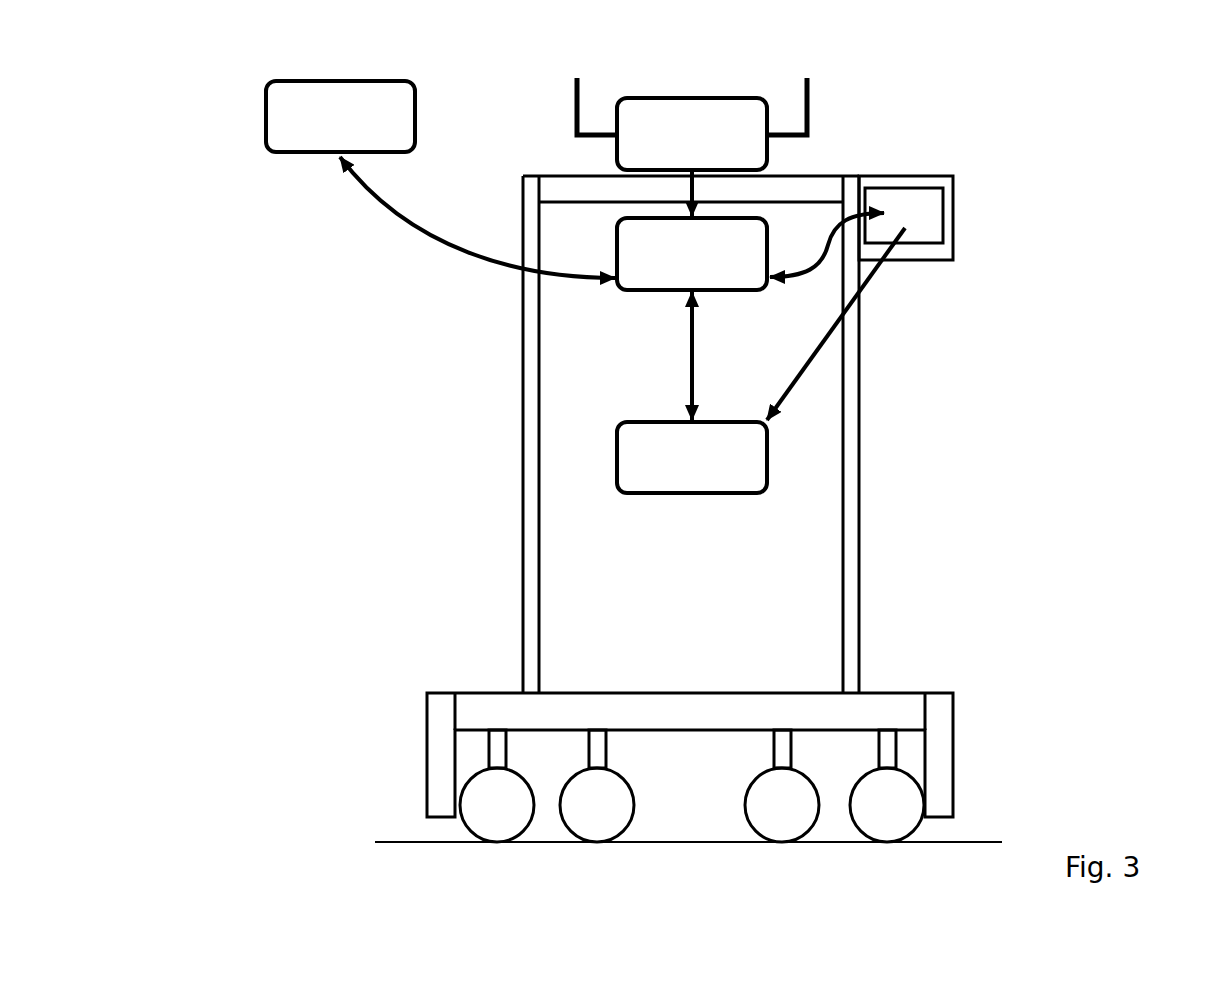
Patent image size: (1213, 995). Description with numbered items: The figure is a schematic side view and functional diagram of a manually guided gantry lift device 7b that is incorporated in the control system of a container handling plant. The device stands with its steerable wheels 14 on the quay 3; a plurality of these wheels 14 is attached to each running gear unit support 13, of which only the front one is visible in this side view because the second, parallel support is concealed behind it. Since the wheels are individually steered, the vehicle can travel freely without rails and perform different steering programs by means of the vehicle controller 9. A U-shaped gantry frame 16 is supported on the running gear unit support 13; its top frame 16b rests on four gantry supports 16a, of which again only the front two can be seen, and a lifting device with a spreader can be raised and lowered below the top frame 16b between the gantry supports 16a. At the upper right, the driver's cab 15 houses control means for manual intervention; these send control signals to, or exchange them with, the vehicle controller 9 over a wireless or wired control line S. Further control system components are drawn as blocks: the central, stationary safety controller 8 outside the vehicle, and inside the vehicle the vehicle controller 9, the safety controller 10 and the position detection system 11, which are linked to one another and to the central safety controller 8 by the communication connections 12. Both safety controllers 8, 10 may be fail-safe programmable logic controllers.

The quay 3 is at (433, 845).
The manually guided gantry lift device 7b is at (931, 120).
The central safety controller 8 is at (295, 106).
The vehicle controller 9 is at (645, 443).
The safety controller 10 is at (660, 248).
The position detection system 11 is at (722, 128).
The communication connections 12 is at (677, 355).
The running gear unit support 13 is at (868, 710).
The steerable wheels 14 is at (871, 805).
The driver's cab 15 is at (930, 207).
The gantry frame 16 is at (667, 346).
The gantry supports 16a is at (521, 393).
The top frame 16b is at (550, 174).
The control line S is at (822, 350).